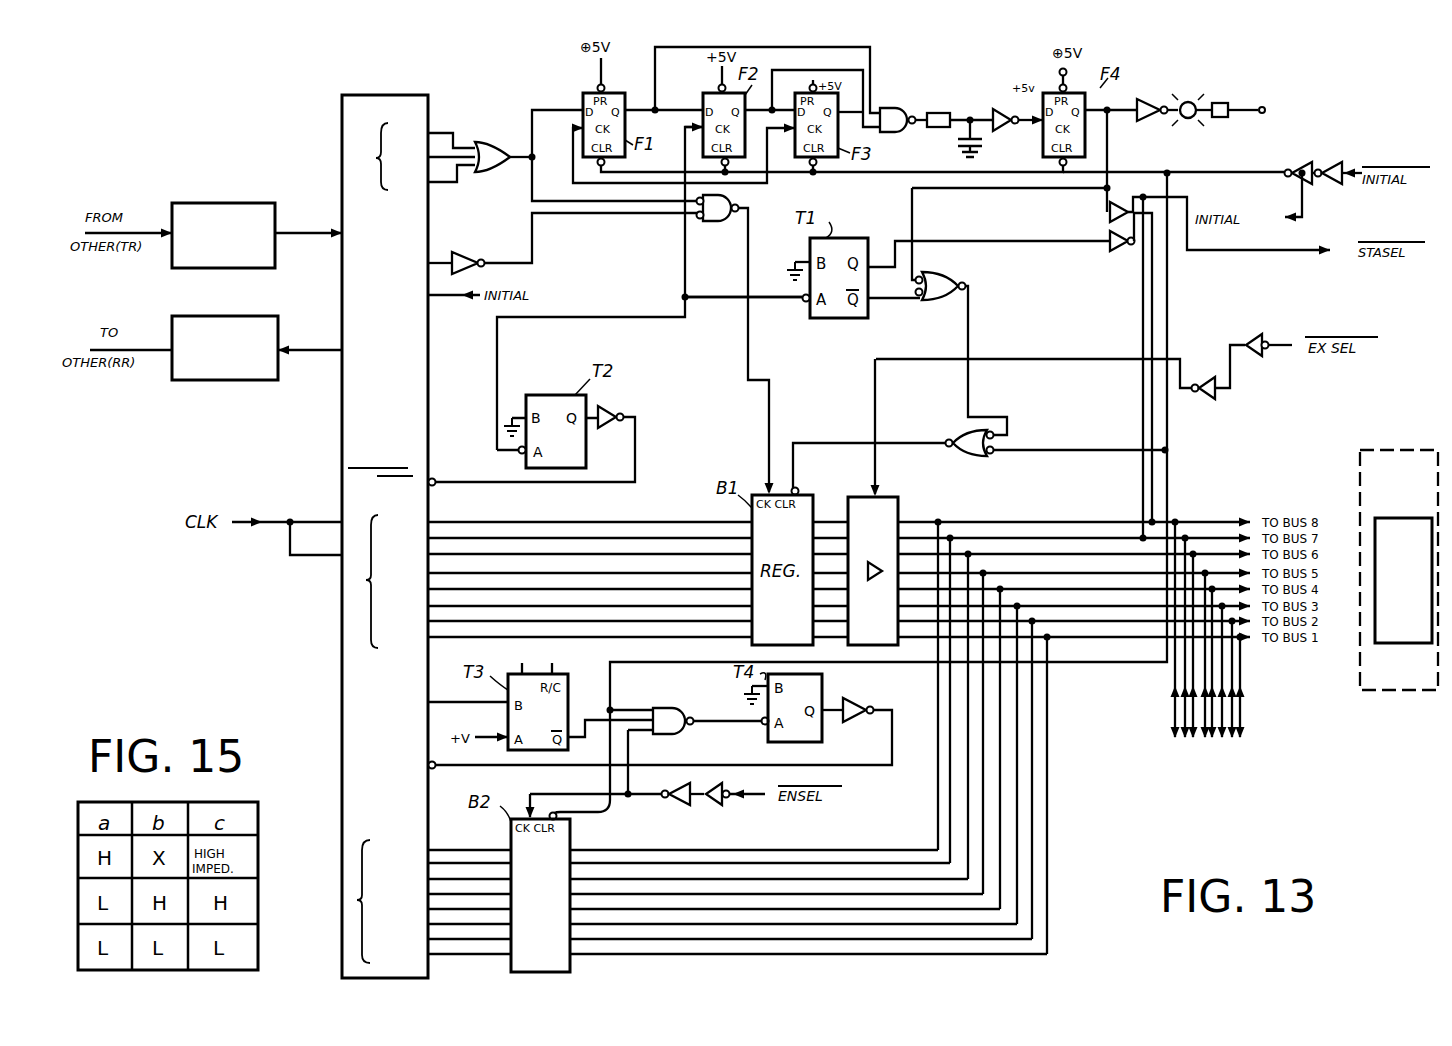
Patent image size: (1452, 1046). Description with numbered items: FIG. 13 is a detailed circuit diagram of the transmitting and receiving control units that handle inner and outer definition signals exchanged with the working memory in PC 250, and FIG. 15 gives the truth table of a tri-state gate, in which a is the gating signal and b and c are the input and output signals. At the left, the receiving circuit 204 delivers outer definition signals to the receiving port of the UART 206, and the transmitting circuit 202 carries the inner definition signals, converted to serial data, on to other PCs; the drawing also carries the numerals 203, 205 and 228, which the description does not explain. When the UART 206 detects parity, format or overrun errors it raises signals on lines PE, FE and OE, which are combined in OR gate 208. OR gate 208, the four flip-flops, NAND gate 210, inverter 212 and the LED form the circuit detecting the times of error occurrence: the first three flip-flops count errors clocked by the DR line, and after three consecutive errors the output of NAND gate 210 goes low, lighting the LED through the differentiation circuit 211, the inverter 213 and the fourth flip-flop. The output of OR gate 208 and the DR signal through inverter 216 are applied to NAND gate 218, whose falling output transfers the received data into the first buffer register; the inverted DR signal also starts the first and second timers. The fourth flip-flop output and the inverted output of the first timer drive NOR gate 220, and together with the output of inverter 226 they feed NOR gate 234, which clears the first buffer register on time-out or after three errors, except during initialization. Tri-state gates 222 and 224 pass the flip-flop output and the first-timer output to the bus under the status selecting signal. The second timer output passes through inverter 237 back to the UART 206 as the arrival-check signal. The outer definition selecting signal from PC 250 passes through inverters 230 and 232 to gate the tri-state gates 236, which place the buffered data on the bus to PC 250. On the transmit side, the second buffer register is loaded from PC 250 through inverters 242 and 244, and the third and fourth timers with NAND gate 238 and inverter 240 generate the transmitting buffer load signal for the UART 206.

The transmitting circuit 202 is at (232, 317).
The line to other receiver register 203 is at (158, 352).
The receiving circuit 204 is at (228, 203).
The bus lines to CPU 205 is at (1252, 748).
The Universal Asynchronous Receiver Transmitter (UART) 206 is at (373, 92).
The OR gate 208 is at (506, 127).
The NAND gate 210 is at (895, 106).
The differentiation circuit 211 is at (1011, 106).
The inverter 212 is at (1158, 96).
The inverter 213 is at (992, 140).
The inverter 216 is at (478, 238).
The NAND gate 218 is at (722, 224).
The NOR gate 220 is at (962, 280).
The tri-state gate 222 is at (1108, 208).
The tri-state gate 224 is at (1115, 252).
The inverter 226 is at (1278, 168).
The inverter 228 is at (1345, 168).
The inverter 230 is at (1266, 323).
The inverter 232 is at (1212, 400).
The NOR gate 234 is at (985, 458).
The tri-state gates 236 is at (900, 512).
The inverter 237 is at (625, 410).
The NAND gate 238 is at (684, 697).
The inverter 240 is at (866, 700).
The inverter 242 is at (725, 808).
The inverter 244 is at (690, 806).
The PC 250 is at (1365, 690).